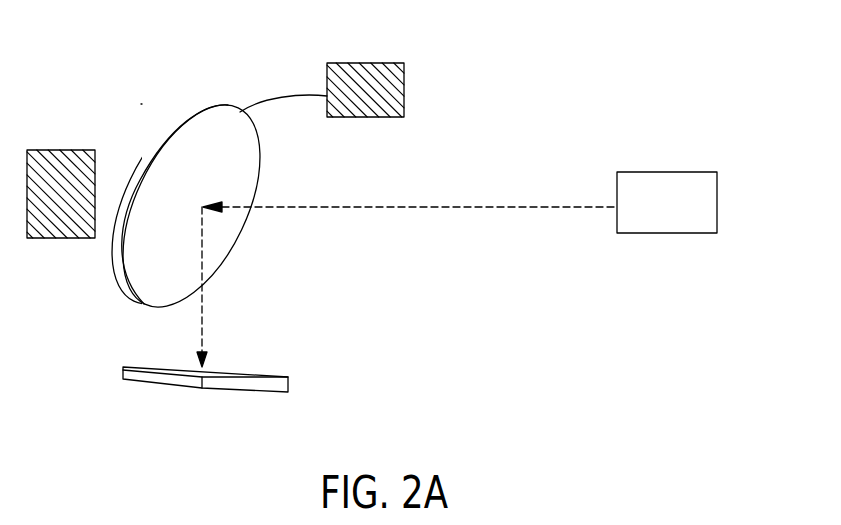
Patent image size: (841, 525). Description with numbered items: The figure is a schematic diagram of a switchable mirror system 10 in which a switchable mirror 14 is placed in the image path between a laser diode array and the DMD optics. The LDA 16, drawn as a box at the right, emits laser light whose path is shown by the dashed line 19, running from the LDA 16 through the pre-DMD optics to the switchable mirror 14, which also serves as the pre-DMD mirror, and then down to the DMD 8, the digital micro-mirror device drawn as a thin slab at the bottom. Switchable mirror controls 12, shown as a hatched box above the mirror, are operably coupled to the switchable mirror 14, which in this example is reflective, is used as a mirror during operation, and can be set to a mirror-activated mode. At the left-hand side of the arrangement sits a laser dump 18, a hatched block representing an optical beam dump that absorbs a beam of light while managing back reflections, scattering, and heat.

The DMD 8 is at (288, 383).
The switchable mirror system 10 is at (647, 143).
The switchable mirror controls 12 is at (360, 63).
The switchable mirror 14 is at (258, 157).
The LDA 16 is at (717, 204).
The laser dump 18 is at (73, 239).
The dashed line 19 is at (552, 199).